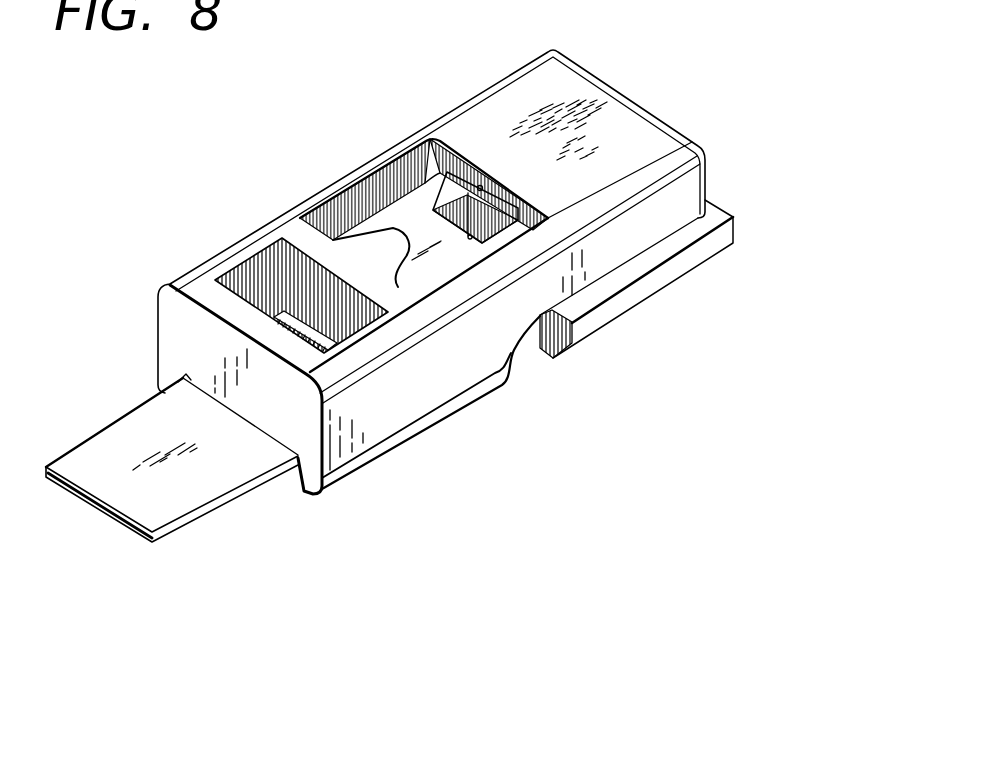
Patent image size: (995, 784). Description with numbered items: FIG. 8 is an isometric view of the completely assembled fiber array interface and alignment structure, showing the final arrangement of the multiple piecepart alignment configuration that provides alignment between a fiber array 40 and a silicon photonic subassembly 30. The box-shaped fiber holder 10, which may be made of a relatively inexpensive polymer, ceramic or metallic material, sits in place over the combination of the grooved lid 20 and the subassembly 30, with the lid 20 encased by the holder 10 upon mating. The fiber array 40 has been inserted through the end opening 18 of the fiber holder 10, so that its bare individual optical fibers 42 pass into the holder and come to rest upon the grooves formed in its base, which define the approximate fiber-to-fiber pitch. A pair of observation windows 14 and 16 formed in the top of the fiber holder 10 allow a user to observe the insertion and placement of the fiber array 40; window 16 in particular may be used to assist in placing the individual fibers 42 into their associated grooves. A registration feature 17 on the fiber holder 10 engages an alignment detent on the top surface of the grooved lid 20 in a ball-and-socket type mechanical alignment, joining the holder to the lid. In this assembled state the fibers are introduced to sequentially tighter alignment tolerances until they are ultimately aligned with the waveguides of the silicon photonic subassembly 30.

The fiber holder 10 is at (385, 146).
The observation window 14 is at (240, 276).
The observation window 16 is at (337, 210).
The registration feature 17 is at (390, 247).
The end opening 18 is at (293, 476).
The grooved lid 20 is at (427, 203).
The silicon photonic subassembly 30 is at (735, 236).
The fiber array 40 is at (98, 458).
The optical fibers 42 is at (290, 343).